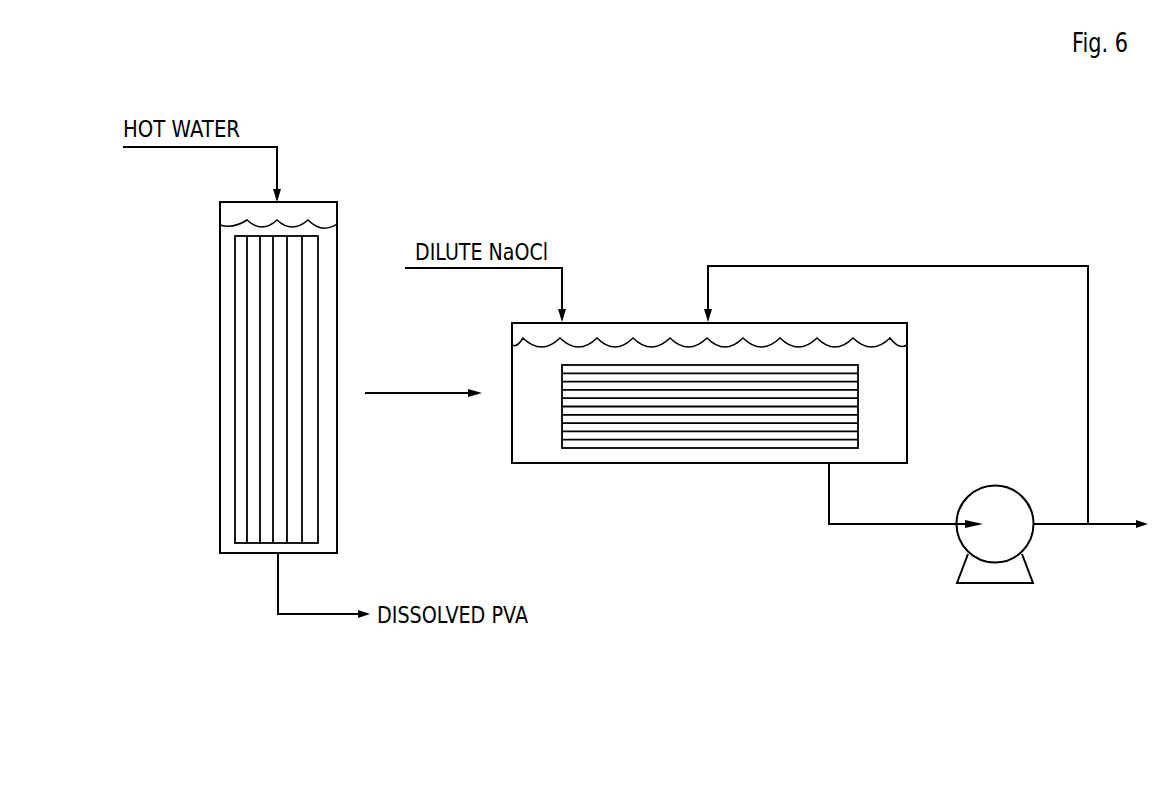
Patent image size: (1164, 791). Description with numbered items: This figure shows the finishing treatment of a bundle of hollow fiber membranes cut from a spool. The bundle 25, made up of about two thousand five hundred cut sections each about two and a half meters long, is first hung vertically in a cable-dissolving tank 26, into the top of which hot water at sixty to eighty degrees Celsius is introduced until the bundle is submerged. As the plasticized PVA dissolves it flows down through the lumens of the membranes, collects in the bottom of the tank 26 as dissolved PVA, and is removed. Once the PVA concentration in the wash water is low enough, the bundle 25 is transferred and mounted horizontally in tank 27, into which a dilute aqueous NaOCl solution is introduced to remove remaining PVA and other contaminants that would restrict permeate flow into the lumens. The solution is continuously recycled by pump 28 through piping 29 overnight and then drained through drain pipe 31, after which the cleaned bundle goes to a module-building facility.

The bundle 25 is at (235, 375).
The cable-dissolving tank 26 is at (220, 282).
The tank 27 is at (743, 464).
The pump 28 is at (1015, 488).
The piping 29 is at (1035, 265).
The drain pipe 31 is at (1117, 525).